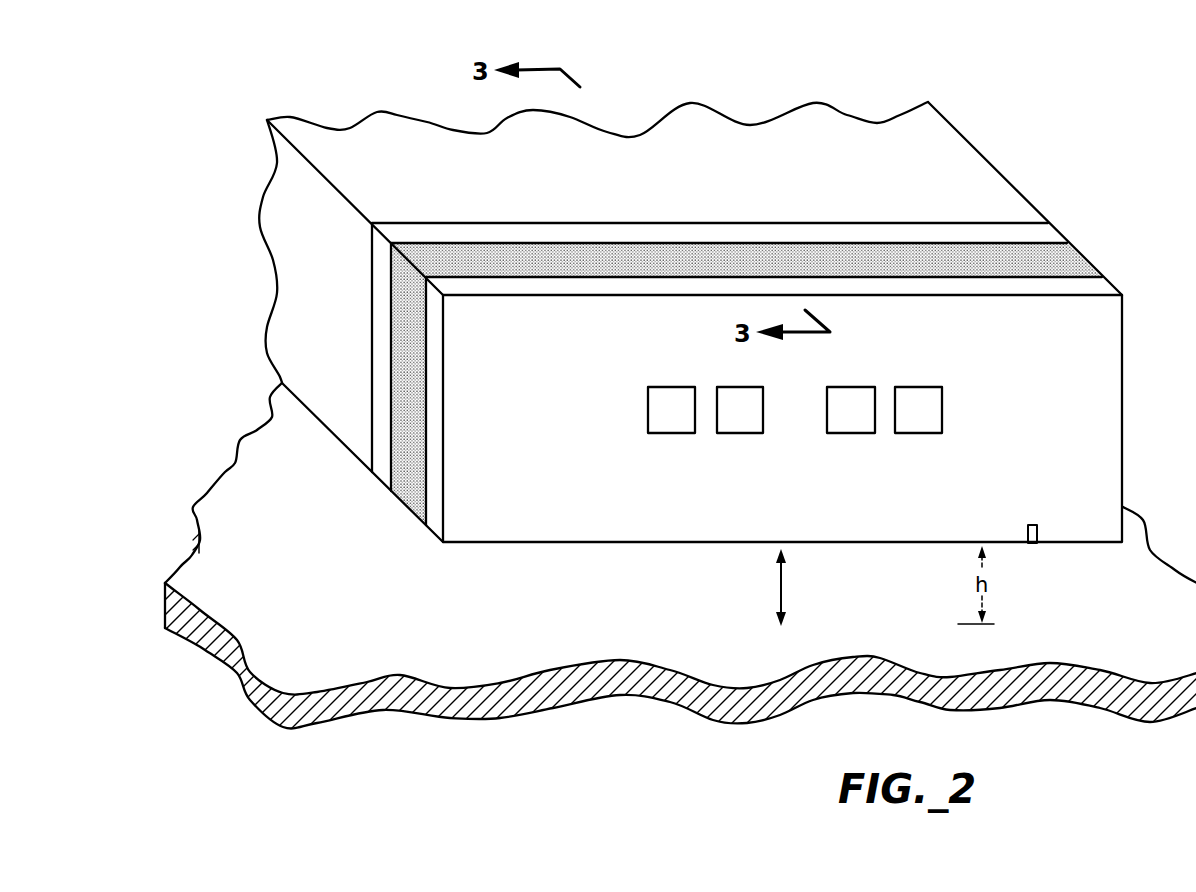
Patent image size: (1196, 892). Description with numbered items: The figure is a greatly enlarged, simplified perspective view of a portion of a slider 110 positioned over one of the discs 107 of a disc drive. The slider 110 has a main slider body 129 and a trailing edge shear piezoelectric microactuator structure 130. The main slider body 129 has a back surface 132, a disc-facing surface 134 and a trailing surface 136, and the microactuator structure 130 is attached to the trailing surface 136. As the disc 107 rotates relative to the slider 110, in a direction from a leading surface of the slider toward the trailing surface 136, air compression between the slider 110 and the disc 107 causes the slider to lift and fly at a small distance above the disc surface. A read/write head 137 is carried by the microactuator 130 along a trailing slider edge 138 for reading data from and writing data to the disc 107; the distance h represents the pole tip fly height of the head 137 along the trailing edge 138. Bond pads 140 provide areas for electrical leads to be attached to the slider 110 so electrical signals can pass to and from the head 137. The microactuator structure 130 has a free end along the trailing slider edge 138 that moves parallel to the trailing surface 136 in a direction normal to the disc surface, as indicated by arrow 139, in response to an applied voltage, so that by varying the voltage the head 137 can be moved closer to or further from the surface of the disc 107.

The disc 107 is at (250, 693).
The slider 110 is at (979, 110).
The main slider body 129 is at (1002, 172).
The trailing edge shear piezoelectric microactuator structure 130 is at (1072, 220).
The back surface 132 is at (392, 122).
The disc-facing surface 134 is at (330, 433).
The trailing surface 136 is at (368, 287).
The read/write head 137 is at (1032, 524).
The trailing slider edge 138 is at (503, 545).
The arrow 139 is at (783, 585).
The bond pads 140 is at (942, 413).